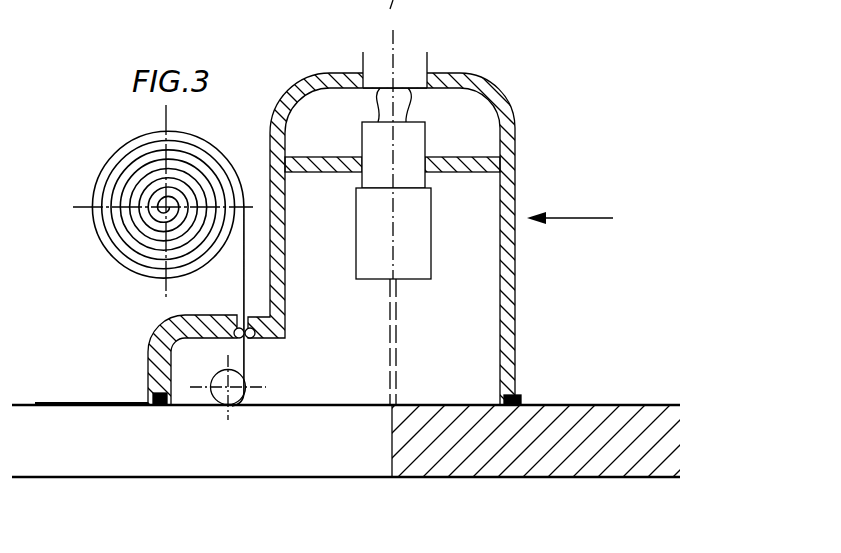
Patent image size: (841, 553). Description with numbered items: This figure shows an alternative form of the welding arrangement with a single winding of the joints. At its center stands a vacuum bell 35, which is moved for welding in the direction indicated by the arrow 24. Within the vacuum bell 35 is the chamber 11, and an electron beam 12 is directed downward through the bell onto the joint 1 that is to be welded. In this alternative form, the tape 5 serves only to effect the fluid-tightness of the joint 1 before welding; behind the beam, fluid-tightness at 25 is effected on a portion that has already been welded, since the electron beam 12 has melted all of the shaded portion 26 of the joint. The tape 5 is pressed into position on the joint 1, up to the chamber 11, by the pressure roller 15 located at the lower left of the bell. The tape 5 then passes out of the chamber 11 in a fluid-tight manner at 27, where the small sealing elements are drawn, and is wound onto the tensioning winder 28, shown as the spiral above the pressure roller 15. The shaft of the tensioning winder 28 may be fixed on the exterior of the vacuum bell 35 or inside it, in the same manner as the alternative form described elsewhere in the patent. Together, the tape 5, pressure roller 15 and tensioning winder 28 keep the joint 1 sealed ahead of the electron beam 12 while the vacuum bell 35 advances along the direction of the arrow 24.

The joint 1 is at (148, 450).
The tape 5 is at (81, 402).
The chamber 11 is at (306, 214).
The electron beam 12 is at (402, 398).
The pressure roller 15 is at (232, 406).
The arrow 24 is at (570, 208).
The fluid-tightness location 25 is at (525, 402).
The shaded portion 26 is at (575, 455).
The fluid-tight passage 27 is at (255, 342).
The tensioning winder 28 is at (132, 175).
The vacuum bell 35 is at (507, 172).